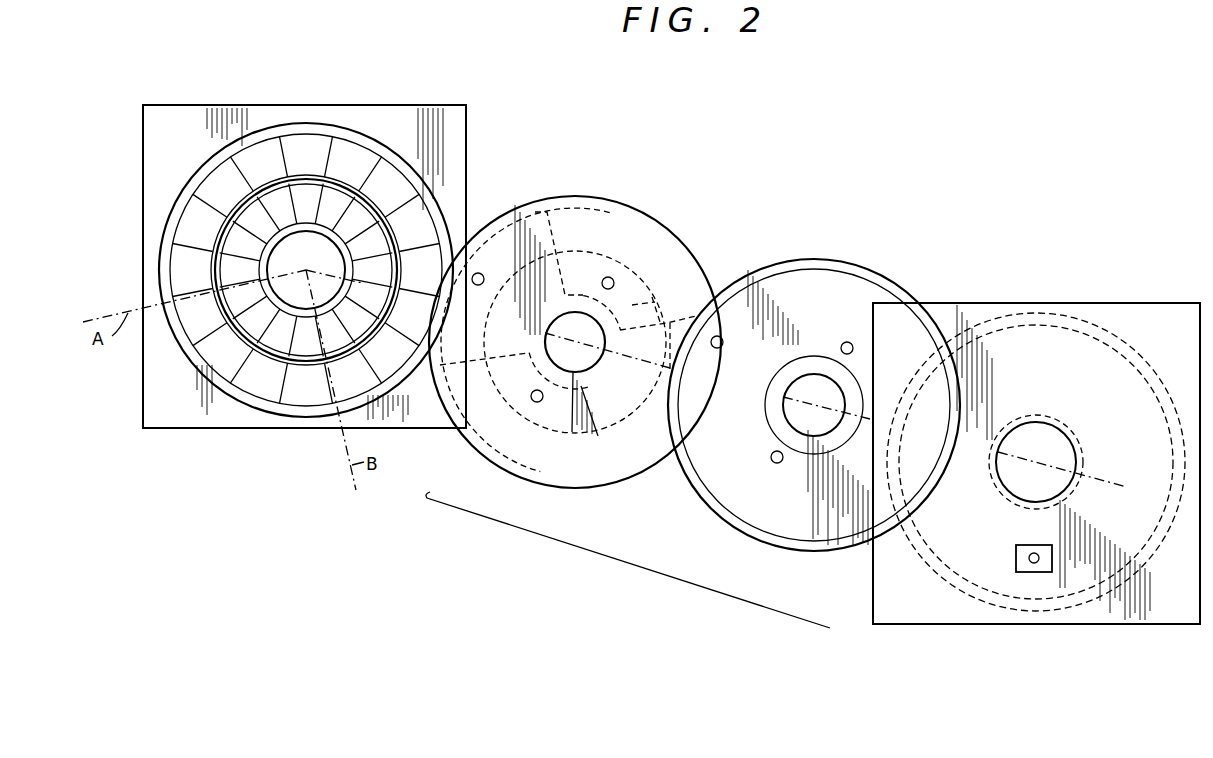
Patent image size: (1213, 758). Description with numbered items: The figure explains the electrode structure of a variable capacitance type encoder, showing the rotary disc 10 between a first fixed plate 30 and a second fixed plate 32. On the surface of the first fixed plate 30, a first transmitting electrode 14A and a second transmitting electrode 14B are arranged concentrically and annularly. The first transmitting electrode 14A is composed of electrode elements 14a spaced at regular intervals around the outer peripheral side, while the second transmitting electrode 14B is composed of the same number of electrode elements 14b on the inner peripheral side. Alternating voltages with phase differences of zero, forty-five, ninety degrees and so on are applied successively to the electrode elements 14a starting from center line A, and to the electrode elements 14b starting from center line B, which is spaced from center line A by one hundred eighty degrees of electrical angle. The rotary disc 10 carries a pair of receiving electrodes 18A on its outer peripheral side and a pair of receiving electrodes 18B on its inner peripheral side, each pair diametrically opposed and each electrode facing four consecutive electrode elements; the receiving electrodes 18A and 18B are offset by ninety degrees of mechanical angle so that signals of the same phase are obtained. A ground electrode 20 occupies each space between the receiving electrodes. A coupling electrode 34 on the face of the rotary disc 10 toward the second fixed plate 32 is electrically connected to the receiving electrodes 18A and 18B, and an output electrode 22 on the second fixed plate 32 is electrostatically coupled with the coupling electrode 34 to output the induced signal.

The rotary disc 10 is at (610, 552).
The first transmitting electrode 14A is at (313, 128).
The electrode elements 14a is at (393, 176).
The electrode elements 14b is at (233, 309).
The second transmitting electrode 14B is at (248, 346).
The receiving electrodes 18A is at (533, 205).
The receiving electrodes 18B is at (652, 300).
The ground electrode 20 is at (492, 360).
The output electrode 22 is at (1022, 350).
The first fixed plate 30 is at (290, 428).
The second fixed plate 32 is at (905, 626).
The coupling electrode 34 is at (830, 293).